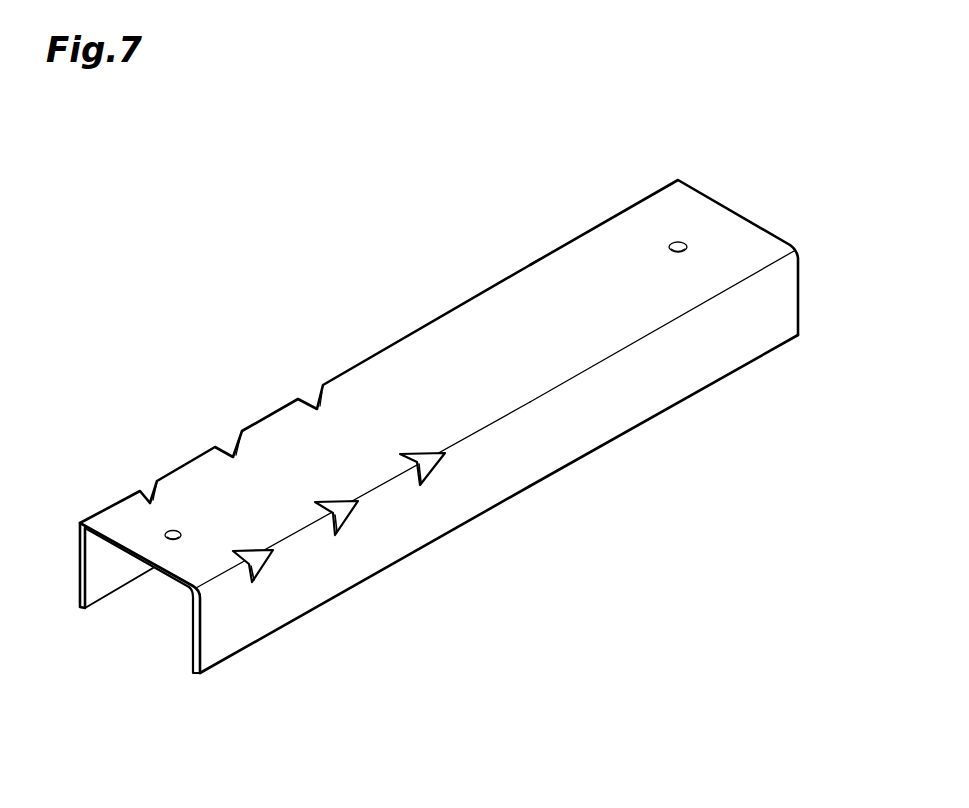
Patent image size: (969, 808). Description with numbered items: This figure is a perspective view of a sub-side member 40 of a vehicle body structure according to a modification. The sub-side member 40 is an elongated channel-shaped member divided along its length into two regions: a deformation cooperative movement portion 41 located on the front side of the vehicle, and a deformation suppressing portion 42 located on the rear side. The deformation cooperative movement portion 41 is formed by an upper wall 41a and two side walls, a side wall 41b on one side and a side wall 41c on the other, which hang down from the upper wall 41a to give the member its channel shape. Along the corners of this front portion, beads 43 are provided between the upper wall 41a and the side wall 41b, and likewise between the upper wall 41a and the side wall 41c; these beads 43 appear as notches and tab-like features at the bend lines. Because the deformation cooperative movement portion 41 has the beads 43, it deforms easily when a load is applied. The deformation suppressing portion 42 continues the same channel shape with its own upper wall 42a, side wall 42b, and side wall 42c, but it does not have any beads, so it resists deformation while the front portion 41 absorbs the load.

The sub-side member 40 is at (307, 211).
The deformation cooperative movement portion 41 is at (526, 513).
The upper wall 41a is at (268, 458).
The side wall 41b is at (97, 596).
The side wall 41c is at (213, 642).
The deformation suppressing portion 42 is at (797, 357).
The upper wall of deformation suppressing portion 42a is at (568, 295).
The side wall of deformation suppressing portion 42b is at (513, 310).
The side wall of deformation suppressing portion 42c is at (620, 385).
The beads 43 is at (150, 500).